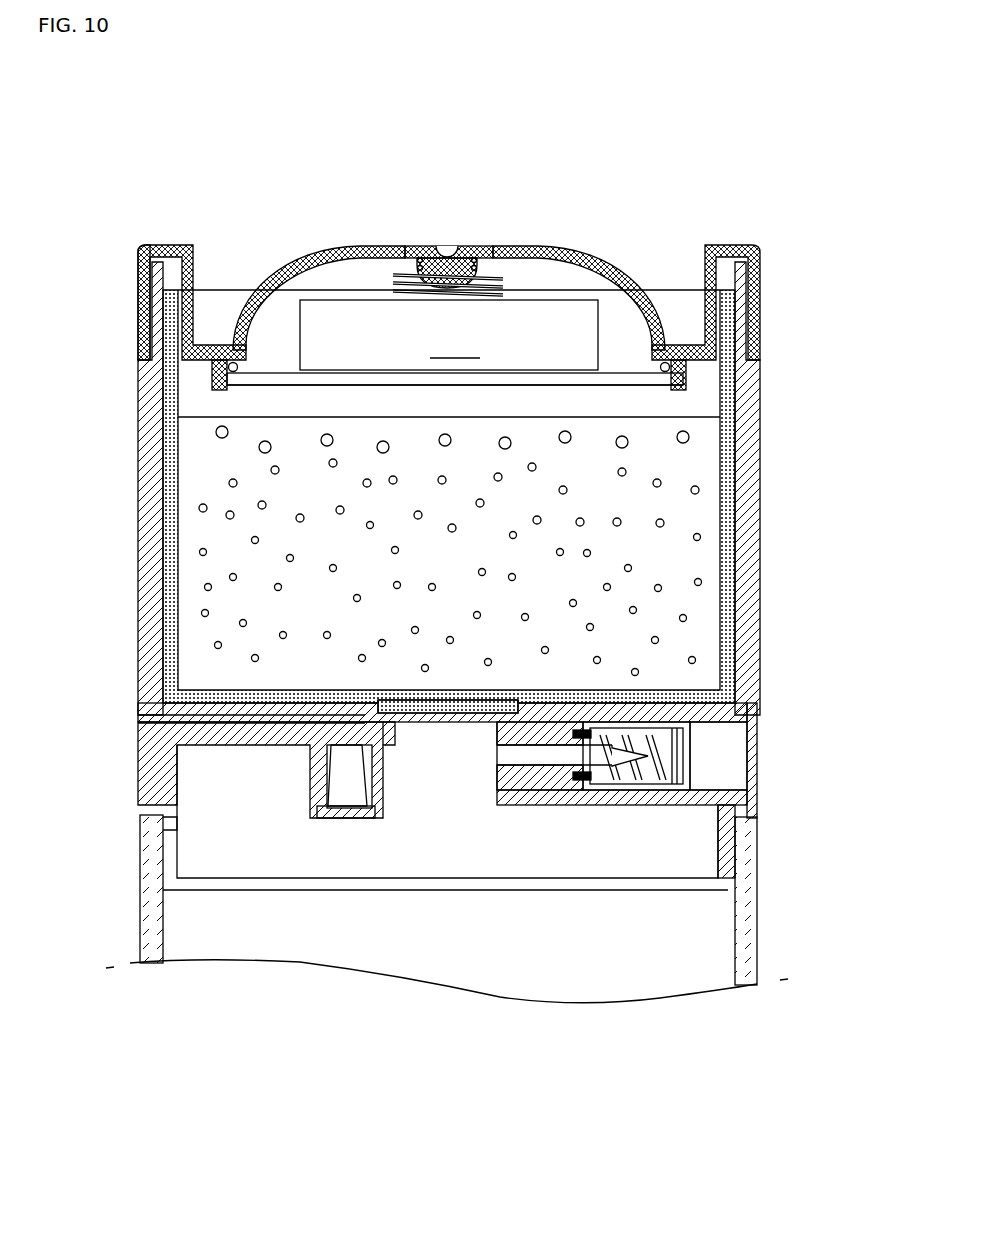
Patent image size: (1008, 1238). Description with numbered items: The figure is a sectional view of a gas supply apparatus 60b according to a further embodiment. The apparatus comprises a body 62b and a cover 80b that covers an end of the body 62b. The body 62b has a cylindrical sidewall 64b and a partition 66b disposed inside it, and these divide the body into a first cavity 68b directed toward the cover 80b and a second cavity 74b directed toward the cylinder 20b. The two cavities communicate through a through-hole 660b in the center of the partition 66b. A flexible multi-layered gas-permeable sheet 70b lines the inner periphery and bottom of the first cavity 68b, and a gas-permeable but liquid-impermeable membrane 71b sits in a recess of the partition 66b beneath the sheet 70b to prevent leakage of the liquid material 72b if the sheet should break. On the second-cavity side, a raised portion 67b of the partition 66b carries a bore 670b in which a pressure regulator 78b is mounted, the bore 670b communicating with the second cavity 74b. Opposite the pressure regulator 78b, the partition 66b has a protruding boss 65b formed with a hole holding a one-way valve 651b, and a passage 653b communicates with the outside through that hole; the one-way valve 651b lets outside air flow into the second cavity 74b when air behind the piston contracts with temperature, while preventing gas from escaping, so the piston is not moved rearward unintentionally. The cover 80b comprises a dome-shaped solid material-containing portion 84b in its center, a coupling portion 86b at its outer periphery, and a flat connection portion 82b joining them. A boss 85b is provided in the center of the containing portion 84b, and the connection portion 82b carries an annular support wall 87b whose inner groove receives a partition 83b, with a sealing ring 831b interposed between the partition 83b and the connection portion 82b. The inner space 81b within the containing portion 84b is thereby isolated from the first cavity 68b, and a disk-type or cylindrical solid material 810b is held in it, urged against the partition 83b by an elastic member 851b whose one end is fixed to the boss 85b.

The cylinder 20b is at (780, 944).
The gas supply apparatus 60b is at (814, 294).
The body 62b is at (782, 512).
The cylindrical sidewall 64b is at (152, 566).
The protruding boss 65b is at (383, 778).
The partition 66b is at (232, 712).
The raised portion 67b is at (572, 797).
The first cavity 68b is at (700, 407).
The flexible multi-layered gas-permeable sheet 70b is at (165, 374).
The gas-permeable but liquid-impermeable membrane 71b is at (487, 722).
The liquid material 72b is at (690, 568).
The second cavity 74b is at (660, 857).
The pressure regulator 78b is at (757, 778).
The cover 80b is at (641, 245).
The inner space 81b is at (346, 278).
The flat connection portion 82b is at (215, 365).
The partition 83b is at (268, 373).
The solid material-containing portion 84b is at (578, 265).
The boss 85b is at (447, 268).
The coupling portion 86b is at (163, 245).
The annular support wall 87b is at (226, 386).
The one-way valve 651b is at (337, 782).
The passage 653b is at (253, 722).
The through-hole 660b is at (450, 718).
The bore 670b is at (615, 760).
The solid material 810b is at (455, 345).
The sealing ring 831b is at (671, 370).
The elastic member 851b is at (497, 278).